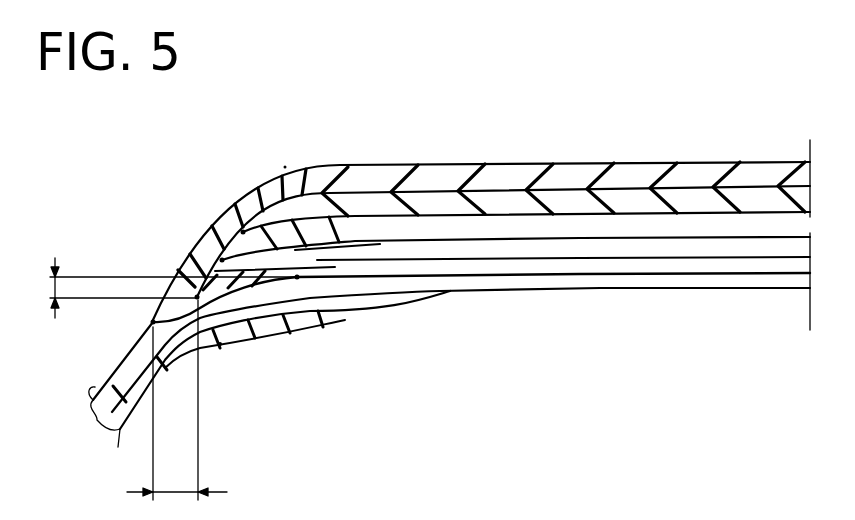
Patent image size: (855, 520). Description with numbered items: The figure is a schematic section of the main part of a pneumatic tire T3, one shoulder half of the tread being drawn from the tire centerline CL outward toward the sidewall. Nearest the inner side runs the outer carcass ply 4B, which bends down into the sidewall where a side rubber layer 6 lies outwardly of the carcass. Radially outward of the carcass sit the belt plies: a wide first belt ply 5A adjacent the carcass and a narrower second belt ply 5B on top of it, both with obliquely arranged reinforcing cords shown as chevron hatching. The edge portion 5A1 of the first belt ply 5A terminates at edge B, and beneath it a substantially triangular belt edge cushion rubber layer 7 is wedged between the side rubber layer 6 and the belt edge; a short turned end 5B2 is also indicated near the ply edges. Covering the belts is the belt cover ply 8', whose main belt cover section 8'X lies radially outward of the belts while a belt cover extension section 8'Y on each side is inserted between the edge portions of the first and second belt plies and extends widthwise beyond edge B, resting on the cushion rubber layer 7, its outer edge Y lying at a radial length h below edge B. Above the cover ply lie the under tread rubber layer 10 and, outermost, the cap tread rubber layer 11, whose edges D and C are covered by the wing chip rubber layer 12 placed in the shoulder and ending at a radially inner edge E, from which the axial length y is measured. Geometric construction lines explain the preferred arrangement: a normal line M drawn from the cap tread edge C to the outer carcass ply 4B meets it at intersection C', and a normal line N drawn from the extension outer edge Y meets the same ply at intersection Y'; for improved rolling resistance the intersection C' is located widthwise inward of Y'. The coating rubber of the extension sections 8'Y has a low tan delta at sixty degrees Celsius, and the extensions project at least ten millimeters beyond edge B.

The cap tread rubber layer 11 is at (748, 173).
The under tread rubber layer 10 is at (570, 200).
The wing chip rubber layer 12 is at (285, 167).
The belt cover ply 8' is at (516, 165).
The main belt cover section 8'X is at (427, 160).
The belt cover extension section 8'Y is at (267, 171).
The end portion of second carcass ply 5B2 is at (333, 247).
The second belt ply 5B is at (690, 257).
The first belt ply 5A is at (585, 277).
The edge portion of the first belt ply 5A1 is at (340, 308).
The outer carcass ply 4B is at (424, 292).
The side rubber layer 6 is at (110, 377).
The belt edge cushion rubber layer 7 is at (193, 258).
The edge of the cap tread rubber layer C is at (185, 186).
The edge of the under tread rubber layer D is at (222, 260).
The radially inner edge of the wing chip rubber layer E is at (153, 322).
The outer edge of the belt cover extension section Y is at (182, 371).
The intersection of normal line N with the outer carcass ply Y' is at (223, 408).
The intersection of normal line M with the outer carcass ply C' is at (294, 383).
The normal line M is at (278, 325).
The edge of the first belt ply B is at (327, 313).
The normal line N is at (228, 404).
The axial length y is at (177, 413).
The tire radial-direction length h is at (164, 288).
The tire centerline CL is at (808, 214).
The pneumatic tire T3 is at (472, 128).